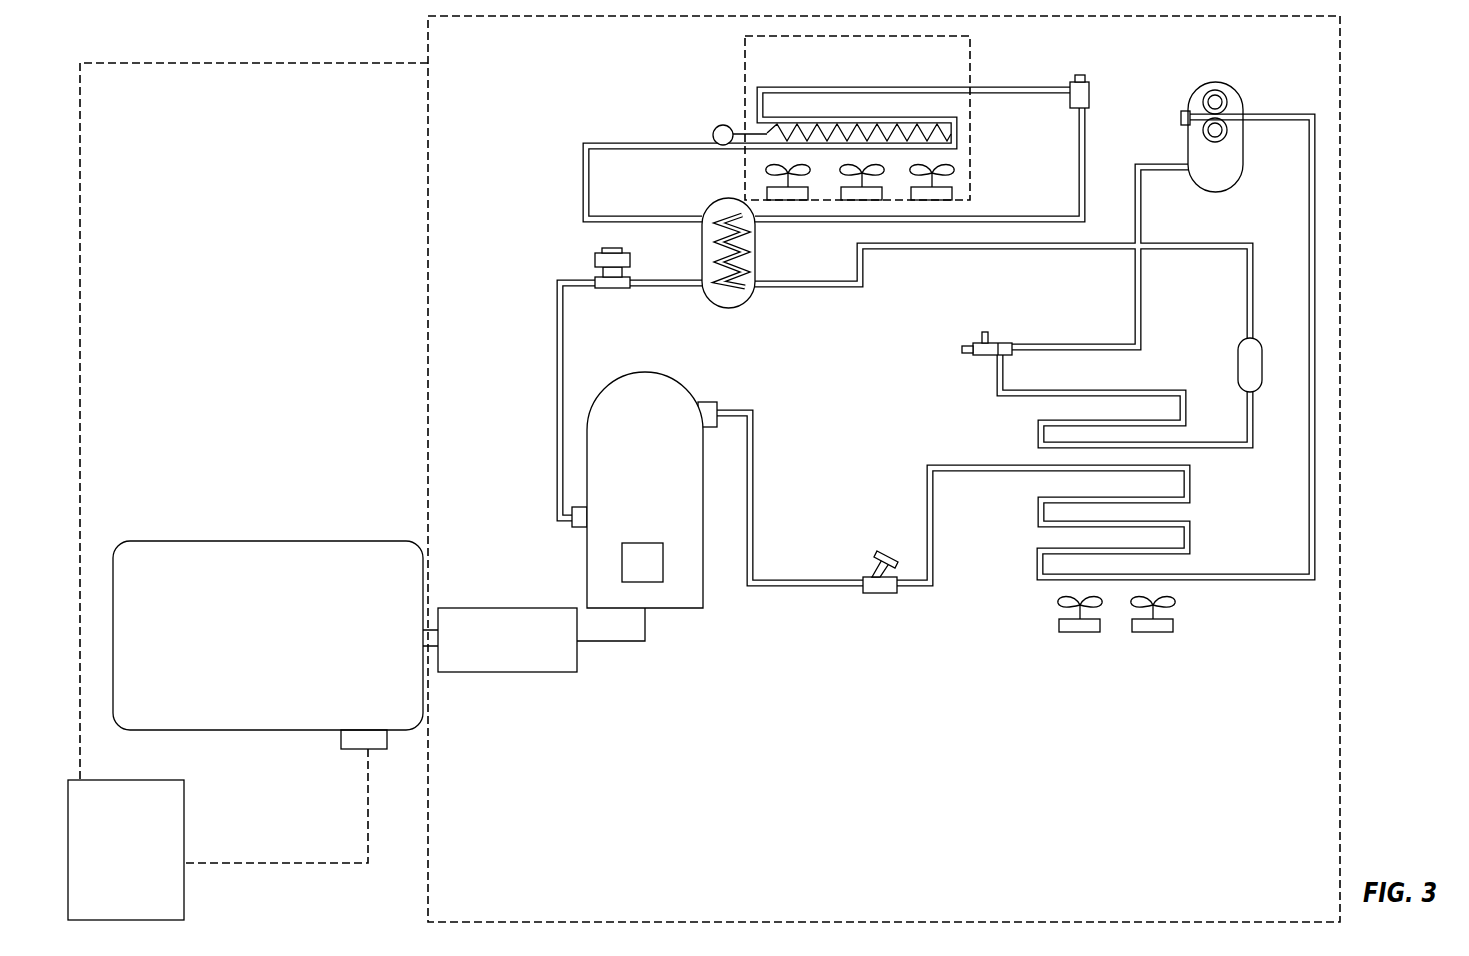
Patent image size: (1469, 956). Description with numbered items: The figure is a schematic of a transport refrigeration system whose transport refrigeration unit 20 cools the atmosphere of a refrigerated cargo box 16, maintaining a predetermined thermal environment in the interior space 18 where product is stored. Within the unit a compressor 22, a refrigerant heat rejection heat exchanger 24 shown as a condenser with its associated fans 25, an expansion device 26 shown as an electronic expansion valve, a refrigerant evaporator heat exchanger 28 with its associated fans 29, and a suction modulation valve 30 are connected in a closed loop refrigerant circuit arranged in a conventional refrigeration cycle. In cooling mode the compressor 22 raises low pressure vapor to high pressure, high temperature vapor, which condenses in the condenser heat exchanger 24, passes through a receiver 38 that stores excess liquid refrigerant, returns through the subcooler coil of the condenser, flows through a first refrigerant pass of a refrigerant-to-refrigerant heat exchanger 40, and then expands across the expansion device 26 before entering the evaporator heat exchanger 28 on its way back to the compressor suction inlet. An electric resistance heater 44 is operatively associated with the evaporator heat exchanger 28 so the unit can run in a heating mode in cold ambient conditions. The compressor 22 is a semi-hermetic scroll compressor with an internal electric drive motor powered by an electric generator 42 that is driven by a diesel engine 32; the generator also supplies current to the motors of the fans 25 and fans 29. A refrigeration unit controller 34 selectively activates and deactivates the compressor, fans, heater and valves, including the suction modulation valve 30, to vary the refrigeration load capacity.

The refrigerated cargo box 16 is at (970, 119).
The interior space 18 is at (875, 78).
The transport refrigeration unit 20 is at (1250, 67).
The compressor 22 is at (703, 583).
The refrigerant heat rejection heat exchanger 24 is at (1204, 486).
The fan 25 is at (1060, 626).
The expansion device 26 is at (1090, 92).
The refrigerant evaporator heat exchanger 28 is at (889, 87).
The fan 29 is at (953, 193).
The suction modulation valve 30 is at (610, 290).
The diesel engine 32 is at (275, 540).
The refrigeration unit controller 34 is at (148, 780).
The receiver 38 is at (1243, 160).
The refrigerant-to-refrigerant heat exchanger 40 is at (757, 270).
The electric generator 42 is at (509, 672).
The electric resistance heater 44 is at (723, 124).